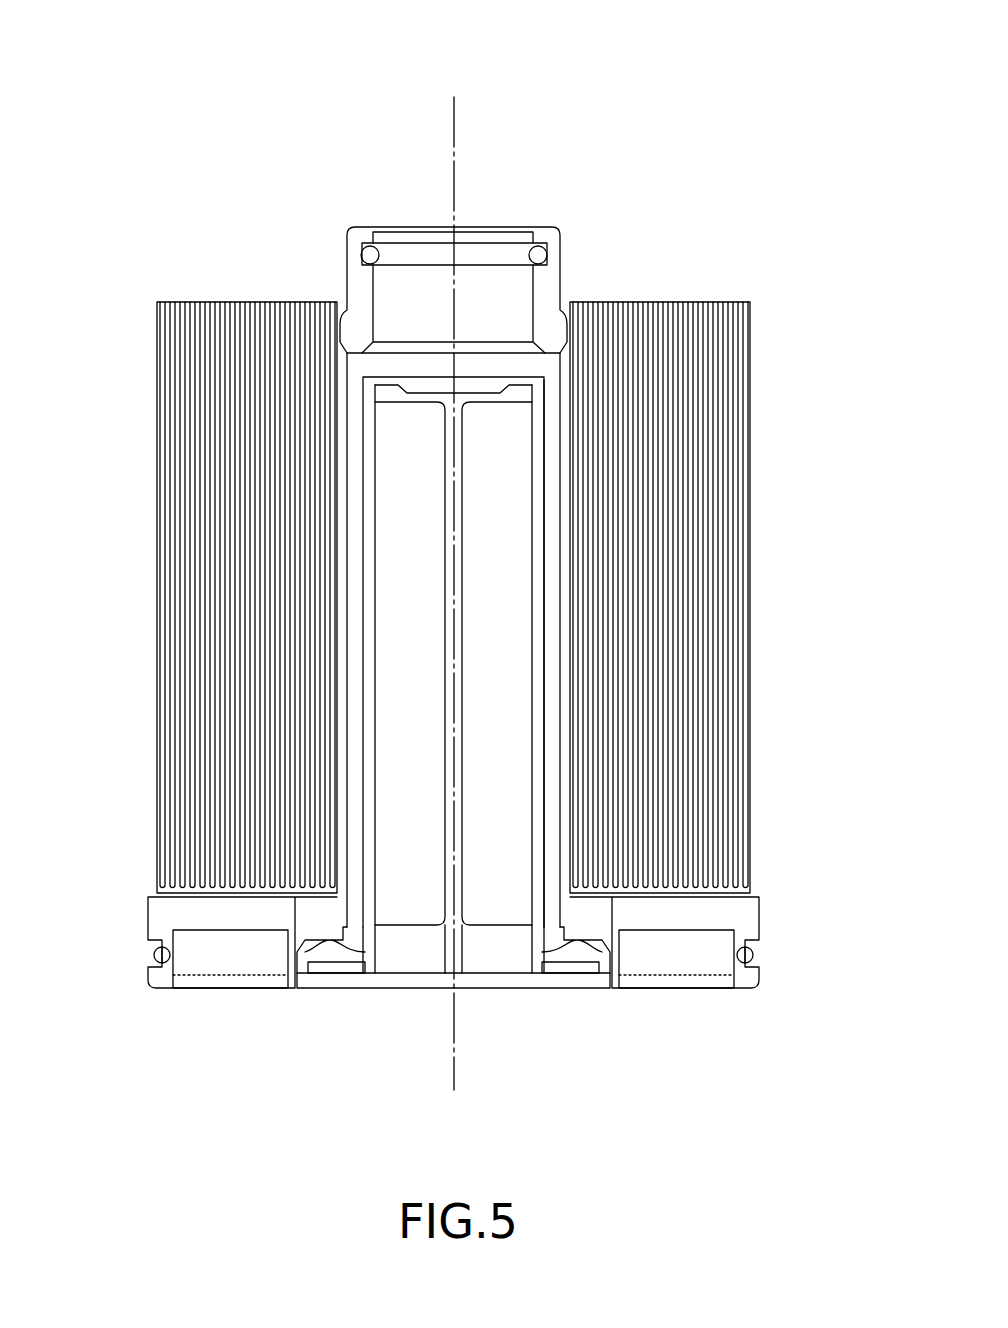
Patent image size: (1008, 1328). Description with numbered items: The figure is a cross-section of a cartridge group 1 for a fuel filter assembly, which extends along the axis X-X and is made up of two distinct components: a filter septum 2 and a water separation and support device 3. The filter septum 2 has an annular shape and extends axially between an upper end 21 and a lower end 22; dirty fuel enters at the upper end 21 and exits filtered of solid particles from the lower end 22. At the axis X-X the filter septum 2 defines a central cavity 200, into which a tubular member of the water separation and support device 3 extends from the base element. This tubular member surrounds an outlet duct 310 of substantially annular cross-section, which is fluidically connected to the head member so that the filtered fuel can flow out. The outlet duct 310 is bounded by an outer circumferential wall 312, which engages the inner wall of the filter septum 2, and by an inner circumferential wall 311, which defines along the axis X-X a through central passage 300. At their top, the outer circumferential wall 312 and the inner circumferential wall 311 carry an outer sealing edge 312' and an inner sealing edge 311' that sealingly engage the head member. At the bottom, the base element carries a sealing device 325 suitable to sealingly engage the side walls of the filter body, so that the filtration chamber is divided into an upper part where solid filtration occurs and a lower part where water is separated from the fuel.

The cartridge group 1 is at (150, 90).
The filter septum 2 is at (105, 380).
The water separation and support device 3 is at (537, 1045).
The upper end 21 is at (735, 302).
The lower end 22 is at (727, 893).
The central cavity 200 is at (563, 315).
The through central passage 300 is at (522, 213).
The outlet duct 310 is at (459, 563).
The inner circumferential wall 311 is at (305, 568).
The inner sealing edge 311' is at (372, 273).
The outer circumferential wall 312 is at (727, 652).
The outer sealing edge 312' is at (538, 206).
The sealing device 325 is at (772, 955).